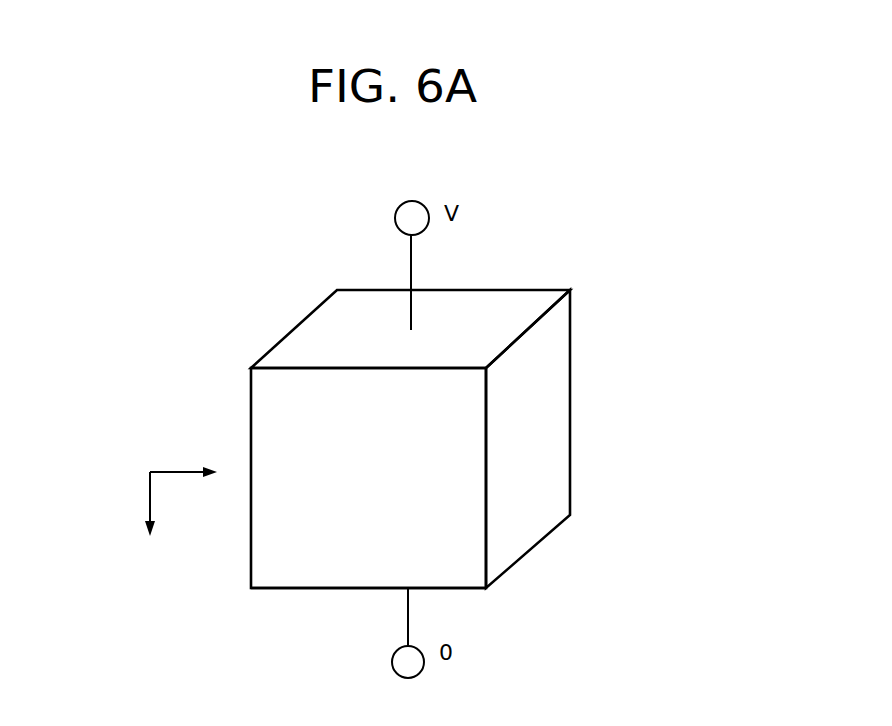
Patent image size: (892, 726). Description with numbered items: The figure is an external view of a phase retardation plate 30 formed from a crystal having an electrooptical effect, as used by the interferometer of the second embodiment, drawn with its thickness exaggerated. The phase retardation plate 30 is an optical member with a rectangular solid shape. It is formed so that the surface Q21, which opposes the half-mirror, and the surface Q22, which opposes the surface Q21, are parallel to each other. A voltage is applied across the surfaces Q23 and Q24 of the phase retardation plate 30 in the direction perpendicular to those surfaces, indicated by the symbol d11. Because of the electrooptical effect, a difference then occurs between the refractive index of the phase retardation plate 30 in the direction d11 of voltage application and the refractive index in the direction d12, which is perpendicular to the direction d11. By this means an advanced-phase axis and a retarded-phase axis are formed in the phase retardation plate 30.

The phase retardation plate 30 is at (428, 444).
The surface Q21 is at (305, 573).
The surface Q22 is at (571, 430).
The surface Q23 is at (312, 333).
The surface Q24 is at (463, 593).
The direction d11 is at (150, 502).
The direction d12 is at (175, 470).